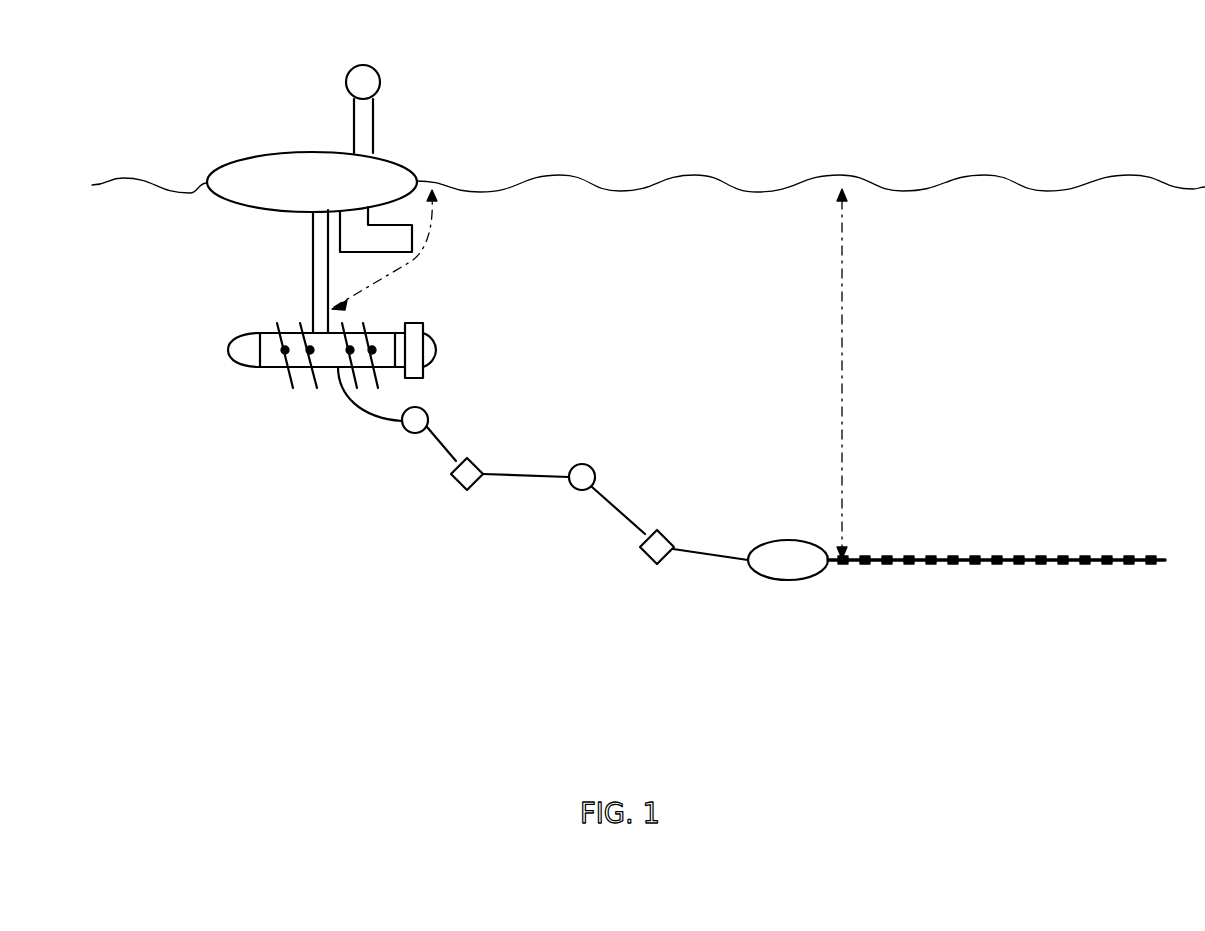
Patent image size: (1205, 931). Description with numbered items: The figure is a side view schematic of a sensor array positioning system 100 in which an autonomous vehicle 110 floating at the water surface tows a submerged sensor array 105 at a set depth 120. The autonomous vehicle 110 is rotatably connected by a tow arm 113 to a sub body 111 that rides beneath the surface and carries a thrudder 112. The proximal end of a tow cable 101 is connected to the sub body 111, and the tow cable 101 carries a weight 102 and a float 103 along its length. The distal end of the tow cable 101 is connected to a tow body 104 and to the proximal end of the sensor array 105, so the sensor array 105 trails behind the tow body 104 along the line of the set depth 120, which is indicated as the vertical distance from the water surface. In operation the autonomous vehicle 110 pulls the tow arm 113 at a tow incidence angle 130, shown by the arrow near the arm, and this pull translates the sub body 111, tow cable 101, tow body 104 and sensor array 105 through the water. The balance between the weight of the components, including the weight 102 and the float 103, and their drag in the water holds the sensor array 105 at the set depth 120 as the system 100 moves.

The sensor array positioning system 100 is at (667, 86).
The tow cable 101 is at (552, 441).
The weight 102 is at (466, 490).
The float 103 is at (585, 490).
The tow body 104 is at (779, 582).
The sensor array 105 is at (888, 565).
The autonomous vehicle 110 is at (297, 141).
The sub body 111 is at (272, 368).
The thrudder 112 is at (438, 353).
The tow arm 113 is at (313, 297).
The set depth 120 is at (840, 416).
The tow incidence angle 130 is at (418, 260).